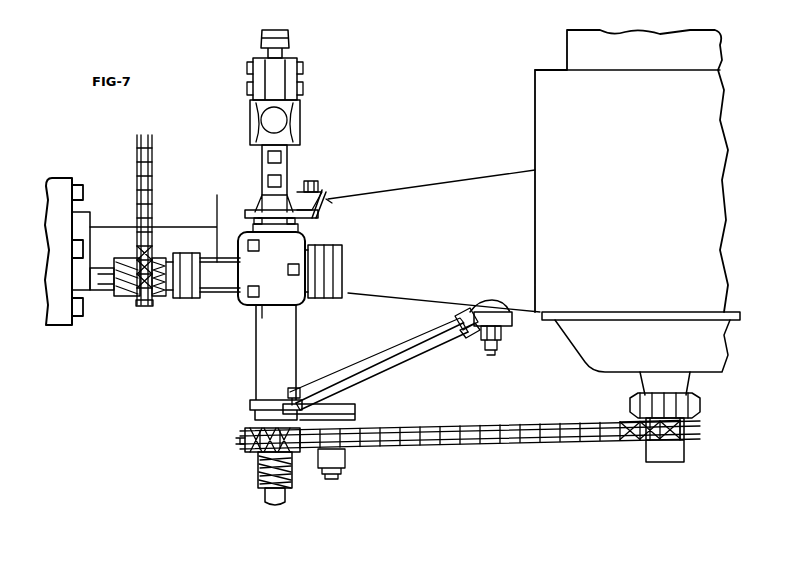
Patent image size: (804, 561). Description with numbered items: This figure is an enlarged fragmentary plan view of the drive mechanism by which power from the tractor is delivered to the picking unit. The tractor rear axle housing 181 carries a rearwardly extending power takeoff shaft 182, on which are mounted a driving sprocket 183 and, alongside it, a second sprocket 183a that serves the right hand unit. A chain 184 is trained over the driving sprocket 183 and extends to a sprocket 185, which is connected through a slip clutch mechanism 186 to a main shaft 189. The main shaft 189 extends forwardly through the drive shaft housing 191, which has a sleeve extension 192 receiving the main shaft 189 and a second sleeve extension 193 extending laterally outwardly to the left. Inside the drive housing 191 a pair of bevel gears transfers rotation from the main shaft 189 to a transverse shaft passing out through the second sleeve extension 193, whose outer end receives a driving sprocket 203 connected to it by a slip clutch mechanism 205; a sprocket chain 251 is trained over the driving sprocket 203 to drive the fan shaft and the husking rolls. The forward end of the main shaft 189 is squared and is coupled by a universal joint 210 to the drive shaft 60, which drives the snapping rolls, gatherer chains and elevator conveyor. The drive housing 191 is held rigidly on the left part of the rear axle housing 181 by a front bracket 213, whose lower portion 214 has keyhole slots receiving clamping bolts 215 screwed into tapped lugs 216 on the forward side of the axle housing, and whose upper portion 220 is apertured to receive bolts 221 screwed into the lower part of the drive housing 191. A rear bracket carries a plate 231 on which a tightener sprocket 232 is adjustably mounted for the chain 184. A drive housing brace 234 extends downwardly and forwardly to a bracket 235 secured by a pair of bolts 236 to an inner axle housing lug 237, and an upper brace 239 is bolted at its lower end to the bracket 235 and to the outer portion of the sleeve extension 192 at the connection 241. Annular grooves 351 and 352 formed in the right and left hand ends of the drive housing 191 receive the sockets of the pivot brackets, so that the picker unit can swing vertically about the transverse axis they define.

The drive shaft 60 is at (286, 37).
The universal joint 210 is at (306, 110).
The main shaft 189 is at (268, 200).
The bolts 221 is at (250, 206).
The clamping bolts 215 is at (310, 180).
The front bracket 213 is at (305, 204).
The lower portion of the front bracket 214 is at (325, 200).
The tapped lugs 216 is at (330, 201).
The upper portion of the front bracket 220 is at (312, 218).
The annular groove 352 is at (328, 248).
The annular groove 351 is at (183, 265).
The sprocket chain 251 is at (137, 153).
The slip clutch mechanism 205 is at (126, 300).
The driving sprocket 203 is at (146, 300).
The second sleeve extension 193 is at (208, 290).
The drive shaft housing 191 is at (240, 312).
The sleeve extension 192 is at (290, 335).
The rear axle housing 181 is at (446, 177).
The inner axle housing lug 237 is at (495, 312).
The bolts 236 is at (496, 344).
The bracket 235 is at (476, 326).
The drive housing brace 234 is at (405, 362).
The upper brace 239 is at (396, 355).
The brace connection 241 is at (298, 392).
The plate 231 is at (360, 414).
The tightener sprocket 232 is at (346, 454).
The chain 184 is at (490, 428).
The sprocket 185 is at (244, 440).
The slip clutch mechanism 186 is at (251, 469).
The driving sprocket 183 is at (650, 443).
The sprocket 183a is at (692, 410).
The power takeoff shaft 182 is at (662, 452).